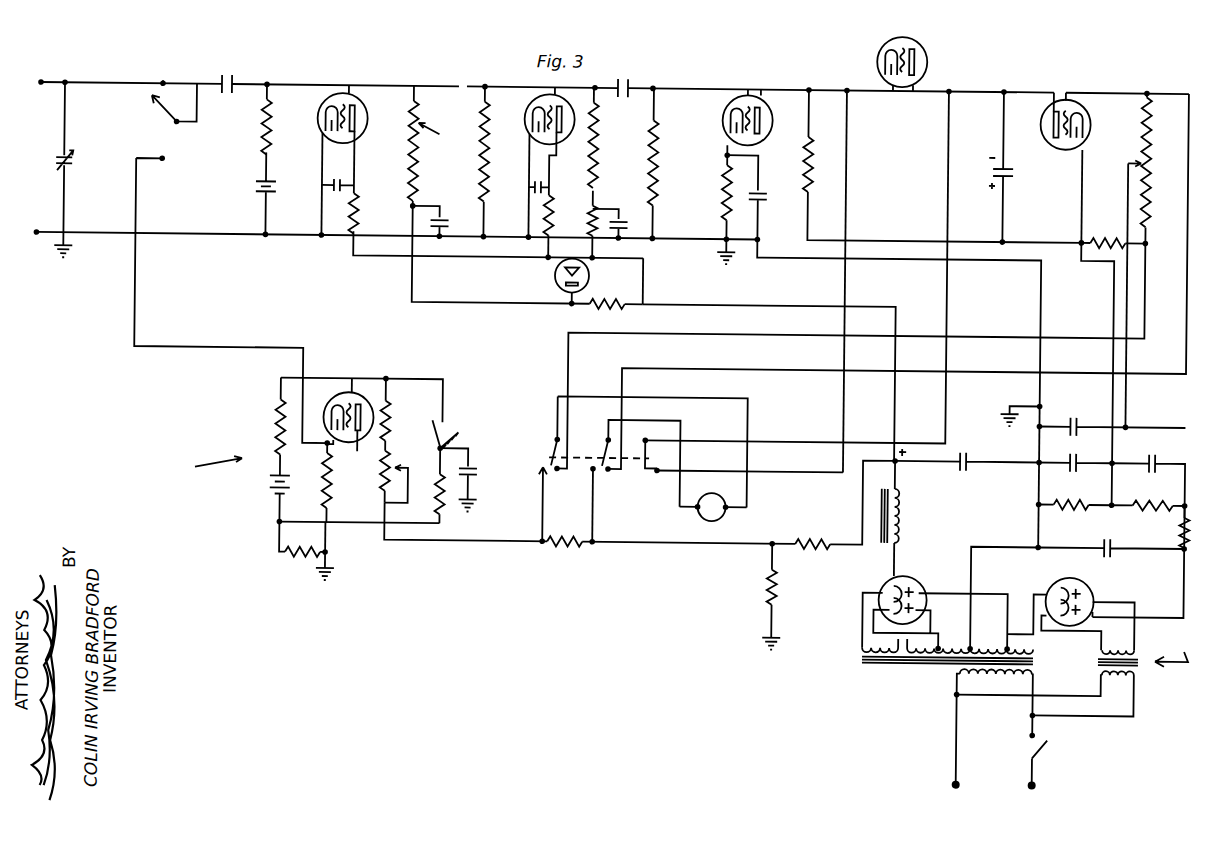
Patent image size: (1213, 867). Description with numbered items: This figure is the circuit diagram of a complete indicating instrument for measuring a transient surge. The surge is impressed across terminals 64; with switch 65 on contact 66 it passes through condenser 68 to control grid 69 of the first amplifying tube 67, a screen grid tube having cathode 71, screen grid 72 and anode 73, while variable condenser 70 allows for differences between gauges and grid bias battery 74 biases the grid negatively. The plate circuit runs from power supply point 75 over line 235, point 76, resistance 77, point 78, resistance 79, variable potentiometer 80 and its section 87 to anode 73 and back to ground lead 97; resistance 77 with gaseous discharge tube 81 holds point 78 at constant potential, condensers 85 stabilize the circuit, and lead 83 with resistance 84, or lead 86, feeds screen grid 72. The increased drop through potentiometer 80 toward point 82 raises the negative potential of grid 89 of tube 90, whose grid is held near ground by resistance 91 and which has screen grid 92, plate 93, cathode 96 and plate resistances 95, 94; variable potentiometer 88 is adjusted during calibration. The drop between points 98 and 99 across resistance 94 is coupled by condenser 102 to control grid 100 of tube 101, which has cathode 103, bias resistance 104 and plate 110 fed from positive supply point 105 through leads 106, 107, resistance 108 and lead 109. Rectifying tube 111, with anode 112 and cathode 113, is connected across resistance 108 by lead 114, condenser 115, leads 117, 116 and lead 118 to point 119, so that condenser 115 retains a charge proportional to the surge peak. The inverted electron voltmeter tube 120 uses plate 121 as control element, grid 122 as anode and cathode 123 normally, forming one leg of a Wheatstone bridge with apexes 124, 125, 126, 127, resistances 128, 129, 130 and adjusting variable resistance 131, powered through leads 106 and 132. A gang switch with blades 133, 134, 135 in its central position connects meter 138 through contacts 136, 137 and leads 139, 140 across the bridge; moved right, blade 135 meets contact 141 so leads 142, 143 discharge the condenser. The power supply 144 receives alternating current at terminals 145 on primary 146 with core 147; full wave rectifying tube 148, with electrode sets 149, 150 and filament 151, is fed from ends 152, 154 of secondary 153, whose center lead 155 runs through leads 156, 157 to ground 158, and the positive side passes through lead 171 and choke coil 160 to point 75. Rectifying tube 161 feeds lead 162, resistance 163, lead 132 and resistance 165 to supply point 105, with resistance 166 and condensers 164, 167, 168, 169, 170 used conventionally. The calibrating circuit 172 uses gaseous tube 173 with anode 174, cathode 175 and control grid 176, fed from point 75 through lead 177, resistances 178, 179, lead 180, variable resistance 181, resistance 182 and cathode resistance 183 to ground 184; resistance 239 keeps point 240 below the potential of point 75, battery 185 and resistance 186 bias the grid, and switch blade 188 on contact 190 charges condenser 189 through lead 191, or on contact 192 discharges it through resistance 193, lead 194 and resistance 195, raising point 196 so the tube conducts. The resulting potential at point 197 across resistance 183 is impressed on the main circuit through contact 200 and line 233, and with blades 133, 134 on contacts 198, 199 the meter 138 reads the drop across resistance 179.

The antenna input terminals 64 is at (41, 81).
The switch blade 65 is at (162, 110).
The switch contact 66 is at (166, 78).
The cathode 67 is at (358, 137).
The coupling capacitor 68 is at (228, 72).
The amplifier tube 69 is at (349, 88).
The variable tuning capacitor 70 is at (70, 170).
The heater 71 is at (319, 107).
The plate 72 is at (362, 126).
The grid 73 is at (362, 106).
The bias battery 74 is at (256, 186).
The junction point 75 is at (897, 452).
The conductor 76 is at (647, 298).
The resistor 77 is at (611, 302).
The lead 78 is at (571, 299).
The potentiometer resistor 79 is at (421, 177).
The resistor upper end 80 is at (417, 100).
The rectifier tube 81 is at (556, 268).
The junction 82 is at (412, 204).
The conductor 83 is at (626, 252).
The plate resistor 84 is at (358, 204).
The bypass capacitor 85 is at (772, 206).
The conductor 86 is at (485, 299).
The resistor 87 is at (421, 150).
The adjustable tap 88 is at (437, 135).
The amplifier tube 89 is at (540, 104).
The cathode 90 is at (528, 131).
The grid resistor 91 is at (490, 163).
The plate lead 92 is at (560, 140).
The resistor 93 is at (592, 99).
The resistor 94 is at (602, 130).
The resistor 95 is at (592, 218).
The heater 96 is at (531, 111).
The ground bus 97 is at (499, 232).
The resistor 98 is at (602, 175).
The resistor 99 is at (601, 100).
The grid 100 is at (762, 128).
The cathode 101 is at (723, 125).
The coupling capacitor 102 is at (636, 77).
The amplifier tube 103 is at (730, 101).
The cathode resistor 104 is at (724, 180).
The junction 105 is at (1118, 450).
The conductor 106 is at (1115, 282).
The conductor 107 is at (1037, 232).
The resistor 108 is at (812, 170).
The plate lead 109 is at (792, 79).
The plate 110 is at (769, 105).
The plate 111 is at (928, 36).
The cathode 112 is at (928, 50).
The rectifier tube 113 is at (878, 47).
The conductor 114 is at (1004, 205).
The electrolytic capacitor 115 is at (1010, 168).
The conductor 116 is at (1004, 128).
The conductor 117 is at (975, 86).
The conductor 118 is at (828, 279).
The junction 119 is at (812, 79).
The grid 120 is at (1052, 126).
The plate 121 is at (1043, 114).
The cathode 122 is at (1060, 134).
The heater 123 is at (1087, 106).
The conductor 124 is at (1148, 82).
The adjustable tap 125 is at (1130, 148).
The junction 126 is at (1148, 232).
The junction 127 is at (1082, 231).
The resistor 128 is at (1153, 106).
The resistor 129 is at (1153, 195).
The resistor 130 is at (1108, 224).
The resistor 131 is at (1153, 150).
The conductor 132 is at (1132, 382).
The relay switch 133 is at (556, 437).
The relay switch 134 is at (604, 435).
The relay switch 135 is at (651, 441).
The contact 136 is at (557, 468).
The contact 137 is at (614, 466).
The motor 138 is at (727, 508).
The conductor 139 is at (769, 365).
The conductor 140 is at (748, 328).
The contact 141 is at (660, 468).
The conductor 142 is at (951, 384).
The conductor 143 is at (785, 466).
The filament transformer 144 is at (1075, 668).
The power supply terminals 145 is at (1030, 777).
The primary winding 146 is at (962, 666).
The transformer core 147 is at (895, 654).
The rectifier tube 148 is at (889, 571).
The filament 149 is at (919, 573).
The anode 150 is at (926, 592).
The anode 151 is at (889, 581).
The winding tap 152 is at (1015, 632).
The secondary winding 153 is at (1040, 647).
The winding tap 154 is at (947, 632).
The winding tap 155 is at (979, 632).
The conductor 156 is at (1002, 530).
The conductor 157 is at (1042, 472).
The ground 158 is at (1008, 405).
The filter choke 160 is at (910, 499).
The rectifier tube 161 is at (1071, 601).
The conductor 162 is at (1165, 603).
The resistor 163 is at (1183, 511).
The capacitor 164 is at (1161, 446).
The resistor 165 is at (1160, 489).
The resistor 166 is at (1077, 489).
The capacitor 167 is at (1074, 445).
The junction 168 is at (1145, 459).
The capacitor 169 is at (1075, 407).
The capacitor 170 is at (1104, 522).
The lead 171 is at (905, 544).
The oscillator circuit 172 is at (198, 465).
The oscillator tube 173 is at (355, 374).
The plate 174 is at (358, 431).
The heater 175 is at (338, 392).
The grid 176 is at (355, 449).
The conductor 177 is at (866, 485).
The resistor 178 is at (817, 529).
The resistor 179 is at (569, 539).
The conductor 180 is at (504, 538).
The potentiometer 181 is at (385, 475).
The resistor 182 is at (397, 409).
The cathode resistor 183 is at (326, 491).
The ground 184 is at (336, 573).
The battery 185 is at (266, 490).
The resistor 186 is at (280, 419).
The relay coil 188 is at (460, 437).
The capacitor 189 is at (484, 453).
The relay switch 190 is at (452, 418).
The conductor 191 is at (449, 375).
The junction 192 is at (450, 457).
The resistor 193 is at (446, 514).
The conductor 194 is at (313, 521).
The resistor 195 is at (290, 552).
The junction 196 is at (278, 519).
The cathode junction 197 is at (328, 442).
The conductor 198 is at (540, 463).
The conductor 199 is at (599, 470).
The switch contact 200 is at (163, 157).
The conductor 233 is at (138, 267).
The conductor 235 is at (788, 300).
The resistor 239 is at (772, 579).
The junction 240 is at (774, 538).